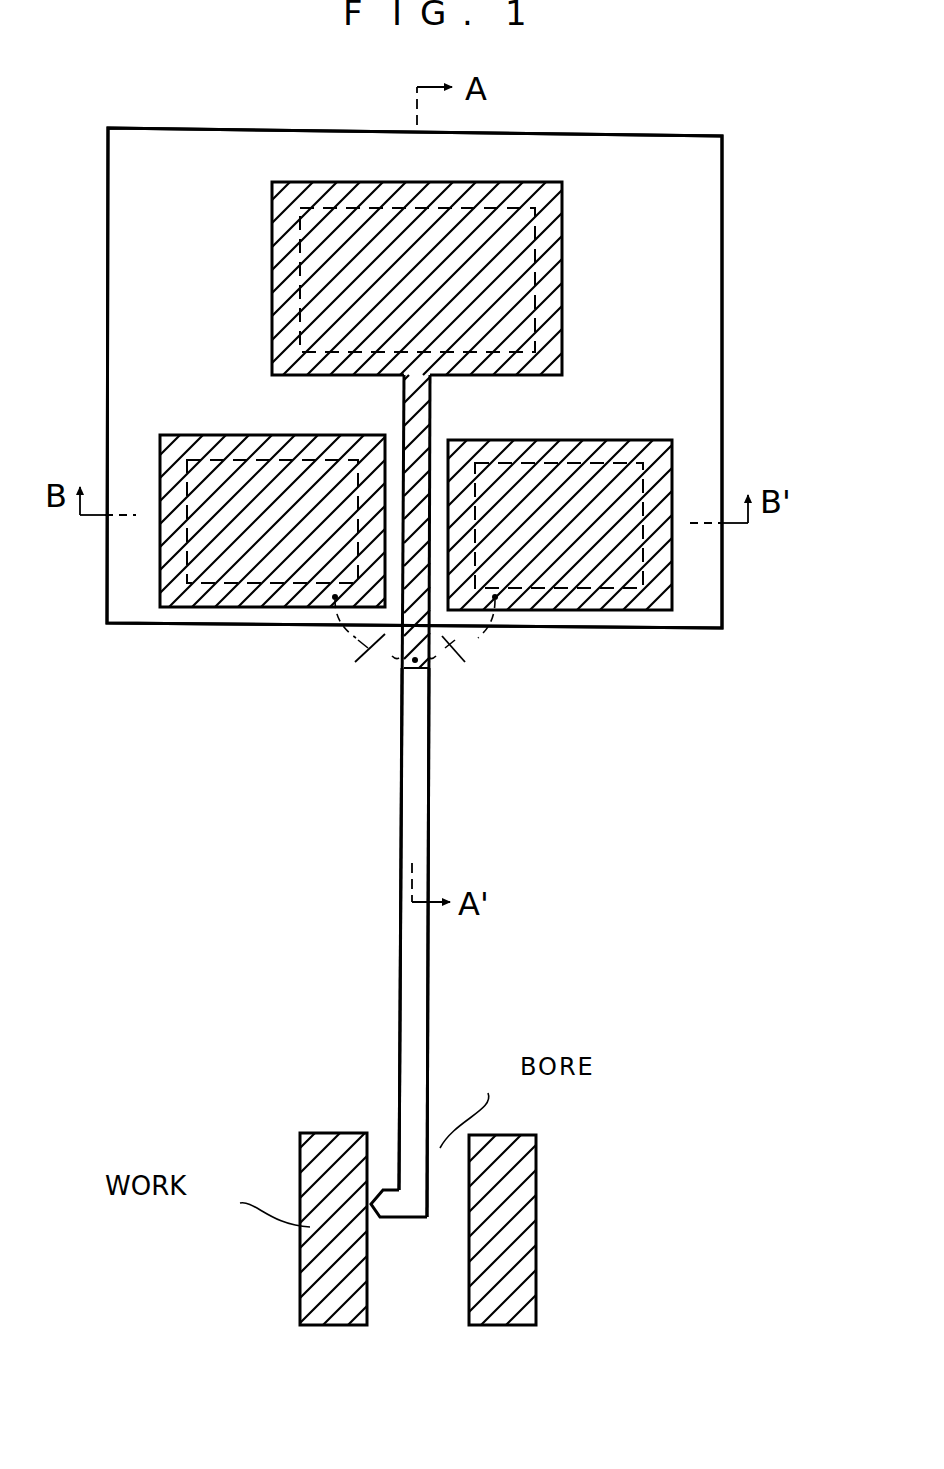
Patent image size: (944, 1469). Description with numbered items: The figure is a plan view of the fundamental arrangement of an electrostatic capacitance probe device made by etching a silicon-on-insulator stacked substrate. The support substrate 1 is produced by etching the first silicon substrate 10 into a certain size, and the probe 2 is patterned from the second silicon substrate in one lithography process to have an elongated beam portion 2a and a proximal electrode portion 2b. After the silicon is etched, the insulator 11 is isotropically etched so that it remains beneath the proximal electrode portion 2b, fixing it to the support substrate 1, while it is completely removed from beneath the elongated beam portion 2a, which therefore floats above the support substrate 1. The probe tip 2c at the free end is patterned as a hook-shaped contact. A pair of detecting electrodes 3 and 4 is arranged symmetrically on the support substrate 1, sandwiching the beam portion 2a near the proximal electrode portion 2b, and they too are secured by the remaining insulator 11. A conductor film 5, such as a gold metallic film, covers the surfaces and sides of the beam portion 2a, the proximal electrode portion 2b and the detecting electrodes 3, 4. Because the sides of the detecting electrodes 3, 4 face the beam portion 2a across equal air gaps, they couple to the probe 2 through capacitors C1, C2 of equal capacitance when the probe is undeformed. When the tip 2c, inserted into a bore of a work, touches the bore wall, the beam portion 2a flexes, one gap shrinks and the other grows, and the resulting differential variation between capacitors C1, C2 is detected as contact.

The support substrate 1 is at (122, 268).
The first silicon substrate 10 is at (697, 270).
The probe 2 is at (396, 751).
The elongated beam portion 2a is at (413, 805).
The proximal electrode portion 2b is at (548, 268).
The probe tip 2c is at (388, 1200).
The detecting electrode 3 is at (198, 592).
The detecting electrode 4 is at (632, 598).
The conductor film 5 is at (376, 228).
The insulator 11 is at (513, 208).
The capacitor C1 is at (362, 648).
The capacitor C2 is at (467, 648).